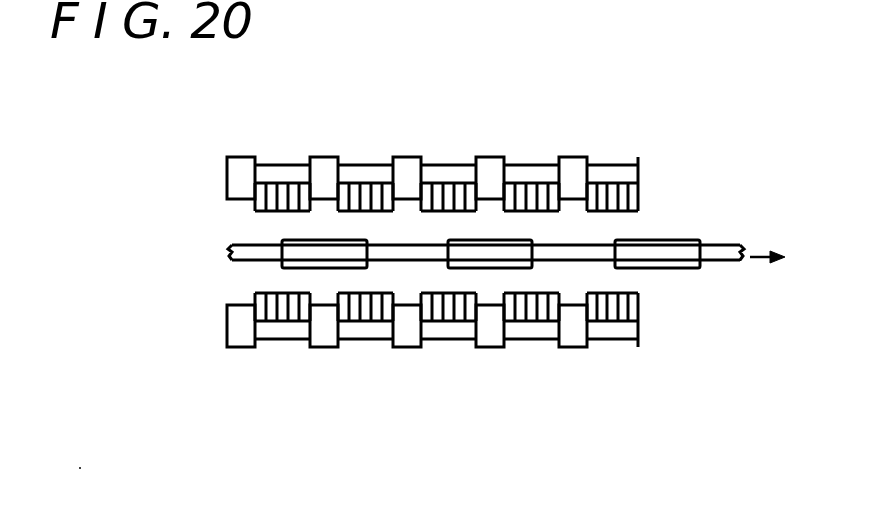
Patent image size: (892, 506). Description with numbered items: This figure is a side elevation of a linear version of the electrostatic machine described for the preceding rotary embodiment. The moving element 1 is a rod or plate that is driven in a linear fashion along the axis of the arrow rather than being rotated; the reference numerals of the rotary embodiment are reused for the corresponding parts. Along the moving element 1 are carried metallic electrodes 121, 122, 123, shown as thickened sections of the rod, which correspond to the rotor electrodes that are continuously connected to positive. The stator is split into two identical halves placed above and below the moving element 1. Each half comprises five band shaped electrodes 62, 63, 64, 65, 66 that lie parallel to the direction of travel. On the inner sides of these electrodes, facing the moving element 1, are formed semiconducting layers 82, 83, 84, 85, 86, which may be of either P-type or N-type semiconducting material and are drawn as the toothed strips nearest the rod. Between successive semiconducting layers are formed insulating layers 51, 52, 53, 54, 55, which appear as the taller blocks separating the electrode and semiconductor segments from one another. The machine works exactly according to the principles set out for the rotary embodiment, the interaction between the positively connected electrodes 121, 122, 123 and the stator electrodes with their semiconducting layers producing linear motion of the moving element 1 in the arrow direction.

The moving element 1 is at (715, 246).
The insulating layer 51 is at (233, 156).
The insulating layer 52 is at (315, 156).
The insulating layer 53 is at (401, 156).
The insulating layer 54 is at (483, 156).
The insulating layer 55 is at (568, 156).
The band shaped electrode 62 is at (290, 170).
The band shaped electrode 63 is at (368, 172).
The band shaped electrode 64 is at (462, 178).
The band shaped electrode 65 is at (545, 180).
The band shaped electrode 66 is at (625, 180).
The semiconducting layer 82 is at (280, 176).
The semiconducting layer 83 is at (355, 176).
The semiconducting layer 84 is at (440, 180).
The semiconducting layer 85 is at (520, 180).
The semiconducting layer 86 is at (600, 180).
The metallic electrode 121 is at (295, 242).
The metallic electrode 122 is at (532, 235).
The metallic electrode 123 is at (668, 260).